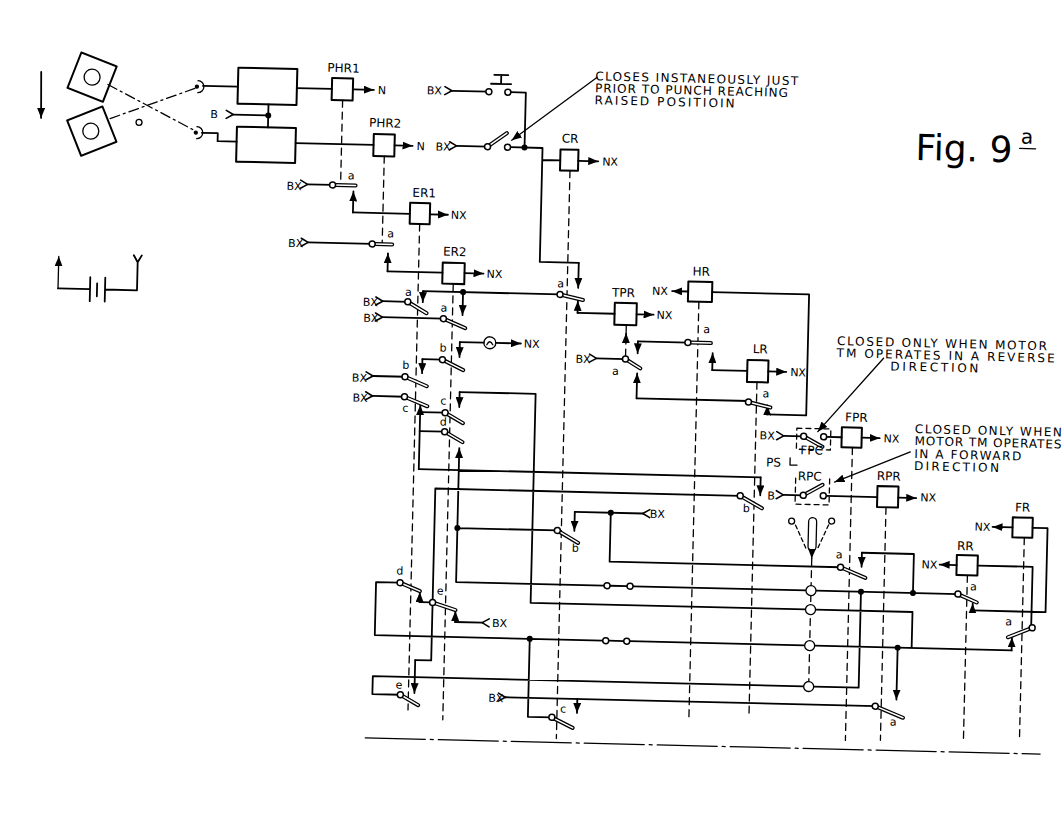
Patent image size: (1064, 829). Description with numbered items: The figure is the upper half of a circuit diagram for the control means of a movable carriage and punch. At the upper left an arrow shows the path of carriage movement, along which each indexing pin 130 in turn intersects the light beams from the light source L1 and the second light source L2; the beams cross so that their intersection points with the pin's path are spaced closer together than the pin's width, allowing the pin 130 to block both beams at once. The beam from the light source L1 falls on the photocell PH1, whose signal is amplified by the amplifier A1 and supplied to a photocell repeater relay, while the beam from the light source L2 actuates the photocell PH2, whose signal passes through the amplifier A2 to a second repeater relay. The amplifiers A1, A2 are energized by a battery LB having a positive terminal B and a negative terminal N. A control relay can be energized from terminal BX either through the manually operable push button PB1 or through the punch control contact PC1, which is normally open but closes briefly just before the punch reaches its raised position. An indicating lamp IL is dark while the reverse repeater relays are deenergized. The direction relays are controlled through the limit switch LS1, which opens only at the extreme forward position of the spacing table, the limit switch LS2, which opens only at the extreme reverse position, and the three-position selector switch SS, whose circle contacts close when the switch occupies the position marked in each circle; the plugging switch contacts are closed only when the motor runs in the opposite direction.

The indexing pin 130 is at (133, 135).
The light source L1 is at (92, 143).
The second light source L2 is at (92, 72).
The photocell PH1 is at (197, 74).
The photocell PH2 is at (197, 144).
The amplifier A1 is at (268, 76).
The amplifier A2 is at (266, 155).
The battery LB is at (97, 279).
The push button PB1 is at (499, 72).
The punch control contact PC1 is at (493, 135).
The indicating lamp IL is at (490, 334).
The limit switch LS1 is at (618, 581).
The limit switch LS2 is at (617, 636).
The selector switch SS is at (821, 531).